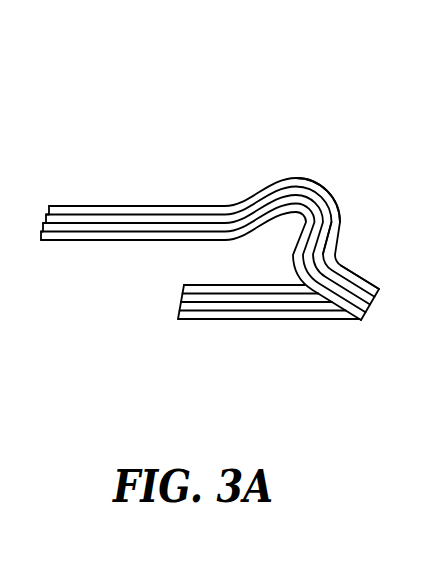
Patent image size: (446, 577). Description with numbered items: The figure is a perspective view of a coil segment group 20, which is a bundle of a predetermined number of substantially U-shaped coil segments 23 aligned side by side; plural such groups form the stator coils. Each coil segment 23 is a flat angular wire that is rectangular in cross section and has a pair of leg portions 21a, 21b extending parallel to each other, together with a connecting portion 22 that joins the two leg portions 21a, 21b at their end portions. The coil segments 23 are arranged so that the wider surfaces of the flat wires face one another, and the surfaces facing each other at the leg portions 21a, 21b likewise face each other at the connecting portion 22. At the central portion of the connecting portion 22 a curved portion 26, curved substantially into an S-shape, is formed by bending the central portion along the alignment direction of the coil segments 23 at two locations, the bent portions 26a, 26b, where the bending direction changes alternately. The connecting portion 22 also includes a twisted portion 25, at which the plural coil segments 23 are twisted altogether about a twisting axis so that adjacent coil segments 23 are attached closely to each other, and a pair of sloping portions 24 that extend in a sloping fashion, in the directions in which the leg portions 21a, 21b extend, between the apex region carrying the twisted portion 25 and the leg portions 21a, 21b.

The coil segment group 20 is at (300, 169).
The leg portion 21a is at (240, 318).
The leg portion 21b is at (106, 214).
The connecting portion 22 is at (355, 270).
The coil segment 23 is at (80, 228).
The sloping portion 24 is at (259, 203).
The twisted portion 25 is at (328, 232).
The curved portion 26 is at (331, 194).
The bent portion 26a is at (310, 203).
The bent portion 26b is at (301, 316).